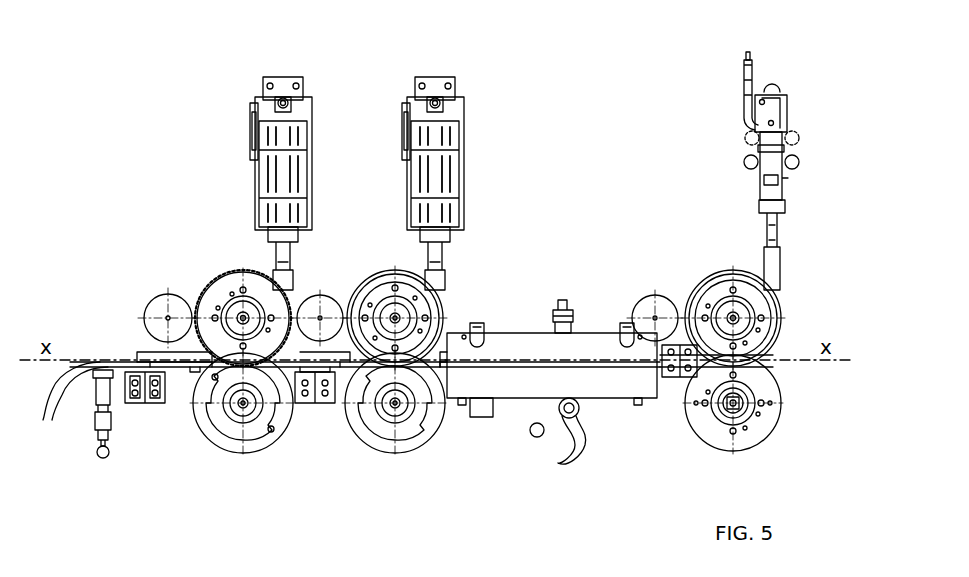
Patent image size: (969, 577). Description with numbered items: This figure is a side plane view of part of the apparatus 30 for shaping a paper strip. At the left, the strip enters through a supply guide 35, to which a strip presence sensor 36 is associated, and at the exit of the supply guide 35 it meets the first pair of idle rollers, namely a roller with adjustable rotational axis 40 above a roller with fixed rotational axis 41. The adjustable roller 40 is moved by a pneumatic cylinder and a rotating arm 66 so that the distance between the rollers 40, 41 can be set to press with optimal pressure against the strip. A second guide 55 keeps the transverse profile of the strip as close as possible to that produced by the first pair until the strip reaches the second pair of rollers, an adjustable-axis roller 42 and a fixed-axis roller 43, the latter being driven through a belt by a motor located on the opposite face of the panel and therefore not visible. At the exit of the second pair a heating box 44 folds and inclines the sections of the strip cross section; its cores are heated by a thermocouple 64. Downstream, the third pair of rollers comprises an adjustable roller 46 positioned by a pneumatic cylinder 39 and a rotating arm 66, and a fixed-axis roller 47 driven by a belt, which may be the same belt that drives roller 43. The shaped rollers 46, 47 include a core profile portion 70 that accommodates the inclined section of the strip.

The apparatus 30 is at (138, 133).
The supply guide 35 is at (103, 360).
The strip presence sensor 36 is at (92, 422).
The pneumatic cylinder 39 is at (770, 88).
The roller with adjustable rotational axis 40 is at (240, 272).
The roller with fixed rotational axis 41 is at (233, 443).
The roller with adjustable rotational axis 42 is at (387, 272).
The roller with fixed rotational axis 43 is at (375, 437).
The heating box 44 is at (533, 340).
The roller with adjustable rotational axis 46 is at (730, 272).
The roller with fixed rotational axis 47 is at (707, 427).
The second guide 55 is at (340, 367).
The thermocouple 64 is at (567, 297).
The rotating arm 66 is at (193, 303).
The core profile portion 70 is at (773, 363).